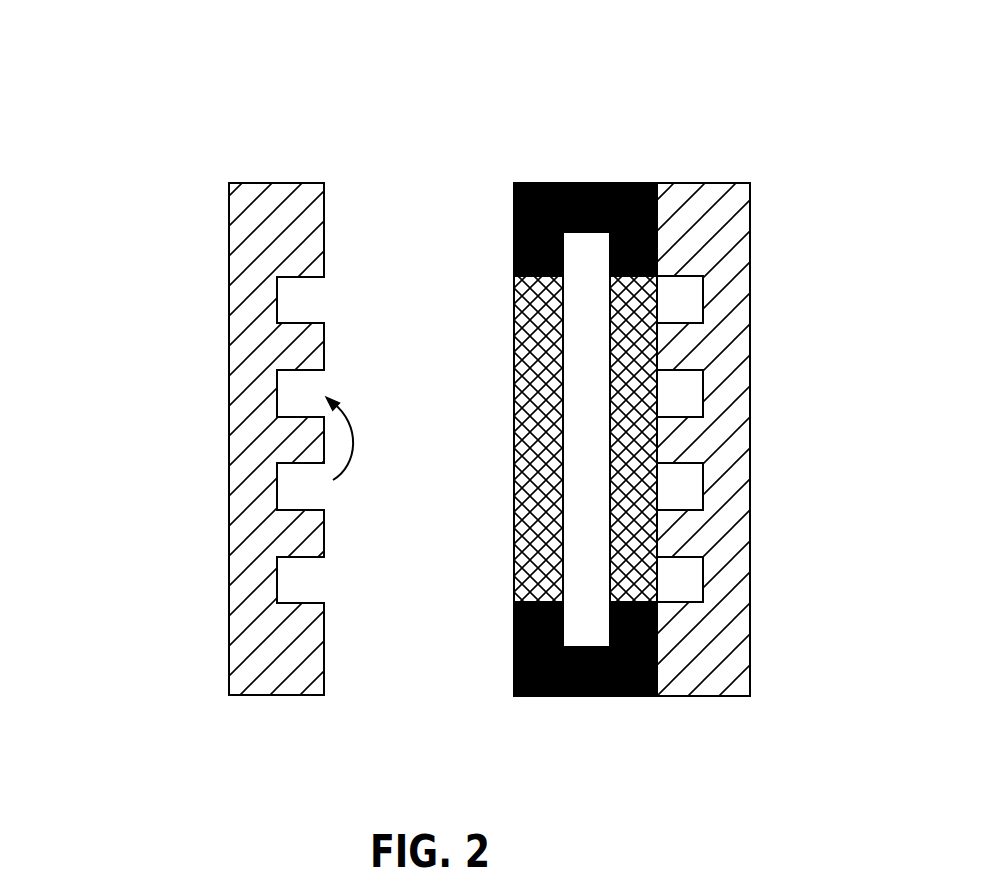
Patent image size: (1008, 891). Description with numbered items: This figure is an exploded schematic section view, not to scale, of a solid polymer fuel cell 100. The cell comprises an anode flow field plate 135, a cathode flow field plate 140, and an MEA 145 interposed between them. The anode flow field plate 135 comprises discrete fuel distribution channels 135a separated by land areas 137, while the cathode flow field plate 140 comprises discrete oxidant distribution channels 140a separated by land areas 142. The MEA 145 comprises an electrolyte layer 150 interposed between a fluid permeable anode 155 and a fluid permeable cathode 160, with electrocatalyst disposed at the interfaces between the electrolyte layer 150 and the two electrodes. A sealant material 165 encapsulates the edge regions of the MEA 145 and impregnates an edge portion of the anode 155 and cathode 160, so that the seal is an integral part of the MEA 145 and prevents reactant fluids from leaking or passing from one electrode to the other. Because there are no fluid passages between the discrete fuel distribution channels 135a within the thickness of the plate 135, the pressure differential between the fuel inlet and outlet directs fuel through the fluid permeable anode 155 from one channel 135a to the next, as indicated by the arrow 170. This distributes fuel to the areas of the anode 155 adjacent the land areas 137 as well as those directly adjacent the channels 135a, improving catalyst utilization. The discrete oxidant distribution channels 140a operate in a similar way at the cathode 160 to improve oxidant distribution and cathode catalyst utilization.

The fuel cell 100 is at (368, 100).
The anode flow field plate 135 is at (257, 278).
The discrete fuel distribution channels 135a is at (290, 355).
The land areas 137 is at (303, 352).
The arrow 170 is at (350, 459).
The cathode flow field plate 140 is at (728, 295).
The discrete oxidant distribution channels 140a is at (682, 388).
The land areas 142 is at (680, 447).
The MEA 145 is at (553, 461).
The sealant material 165 is at (560, 190).
The fluid permeable anode 155 is at (537, 372).
The fluid permeable cathode 160 is at (632, 568).
The electrolyte layer 150 is at (585, 472).